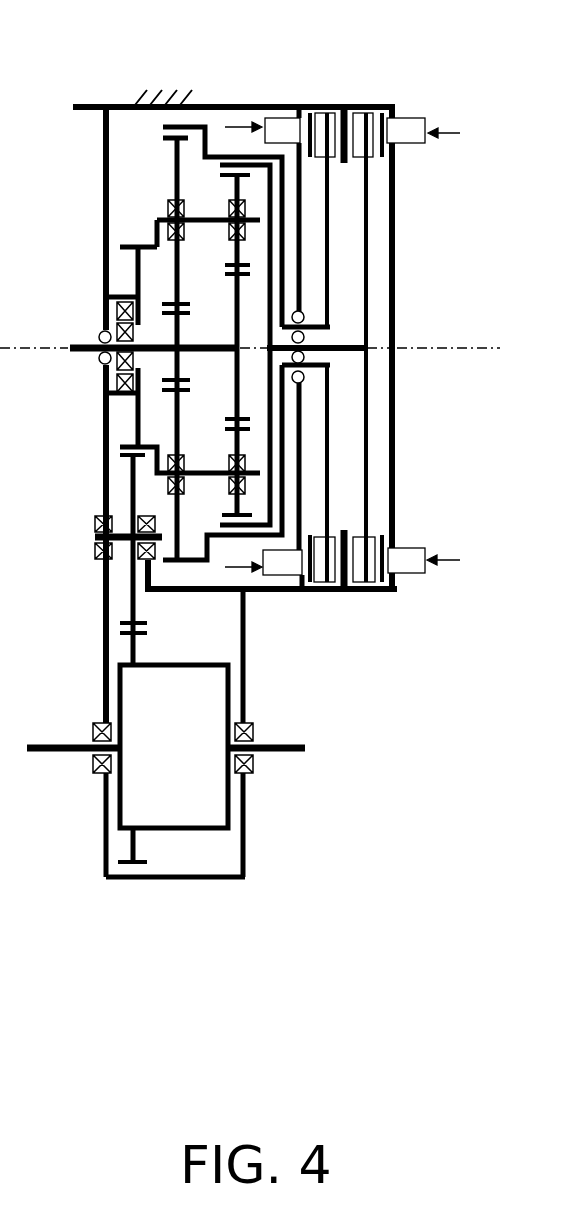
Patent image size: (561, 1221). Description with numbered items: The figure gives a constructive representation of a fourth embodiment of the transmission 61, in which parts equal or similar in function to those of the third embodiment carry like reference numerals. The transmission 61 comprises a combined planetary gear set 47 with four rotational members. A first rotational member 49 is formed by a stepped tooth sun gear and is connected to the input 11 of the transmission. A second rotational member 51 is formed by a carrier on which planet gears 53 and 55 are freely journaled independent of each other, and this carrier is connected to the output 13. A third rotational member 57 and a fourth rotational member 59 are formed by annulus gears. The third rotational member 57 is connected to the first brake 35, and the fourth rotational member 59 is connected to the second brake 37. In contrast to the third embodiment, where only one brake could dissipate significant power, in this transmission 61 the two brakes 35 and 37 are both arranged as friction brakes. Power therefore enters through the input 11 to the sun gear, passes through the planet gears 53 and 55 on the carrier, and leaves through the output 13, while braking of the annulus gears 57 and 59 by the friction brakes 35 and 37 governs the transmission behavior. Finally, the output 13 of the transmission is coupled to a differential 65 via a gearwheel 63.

The input 11 is at (82, 343).
The output 13 is at (118, 445).
The first brake 35 is at (378, 100).
The second brake 37 is at (325, 102).
The combined planetary gear set 47 is at (155, 173).
The first rotational member 49 is at (233, 392).
The second rotational member 51 is at (138, 265).
The planet gear 53 is at (238, 250).
The planet gear 55 is at (175, 188).
The third rotational member 57 is at (238, 165).
The fourth rotational member 59 is at (182, 127).
The transmission 61 is at (292, 607).
The gearwheel 63 is at (130, 595).
The differential 65 is at (172, 800).